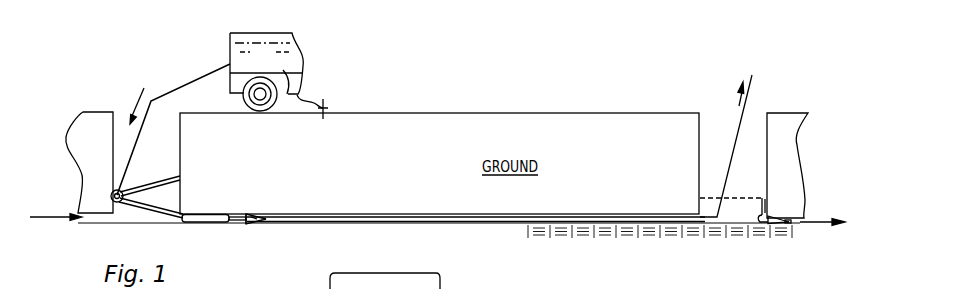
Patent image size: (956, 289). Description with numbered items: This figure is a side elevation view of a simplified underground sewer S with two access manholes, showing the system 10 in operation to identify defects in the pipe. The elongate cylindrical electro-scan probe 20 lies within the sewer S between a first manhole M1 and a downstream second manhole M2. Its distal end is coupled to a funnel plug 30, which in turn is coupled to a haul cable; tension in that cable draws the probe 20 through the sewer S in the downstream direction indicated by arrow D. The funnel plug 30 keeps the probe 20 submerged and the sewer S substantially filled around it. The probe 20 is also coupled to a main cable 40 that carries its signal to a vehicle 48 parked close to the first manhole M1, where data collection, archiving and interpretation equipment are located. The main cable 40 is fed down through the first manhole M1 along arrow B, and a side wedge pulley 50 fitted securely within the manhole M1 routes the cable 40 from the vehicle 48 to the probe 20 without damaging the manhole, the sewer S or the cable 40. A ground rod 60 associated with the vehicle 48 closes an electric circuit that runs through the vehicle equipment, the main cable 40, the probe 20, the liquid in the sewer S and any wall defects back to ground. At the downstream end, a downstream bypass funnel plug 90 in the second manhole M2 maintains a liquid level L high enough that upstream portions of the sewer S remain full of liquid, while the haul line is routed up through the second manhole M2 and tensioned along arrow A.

The system 10 is at (411, 82).
The electro-scan probe 20 is at (202, 223).
The funnel plug 30 is at (251, 225).
The main cable 40 is at (167, 93).
The vehicle 48 is at (240, 50).
The side wedge pulley 50 is at (138, 172).
The ground rod 60 is at (323, 99).
The downstream bypass funnel plug 90 is at (765, 240).
The arrow A is at (739, 100).
The arrow B is at (137, 98).
The arrow D is at (52, 215).
The liquid level L is at (713, 197).
The sewer S is at (89, 219).
The first manhole M1 is at (168, 140).
The second manhole M2 is at (759, 178).